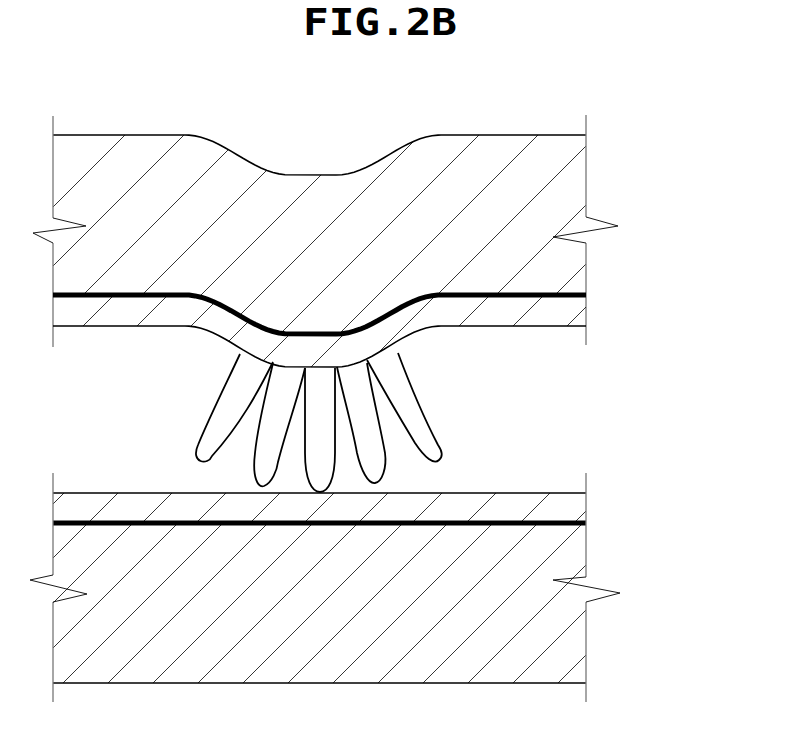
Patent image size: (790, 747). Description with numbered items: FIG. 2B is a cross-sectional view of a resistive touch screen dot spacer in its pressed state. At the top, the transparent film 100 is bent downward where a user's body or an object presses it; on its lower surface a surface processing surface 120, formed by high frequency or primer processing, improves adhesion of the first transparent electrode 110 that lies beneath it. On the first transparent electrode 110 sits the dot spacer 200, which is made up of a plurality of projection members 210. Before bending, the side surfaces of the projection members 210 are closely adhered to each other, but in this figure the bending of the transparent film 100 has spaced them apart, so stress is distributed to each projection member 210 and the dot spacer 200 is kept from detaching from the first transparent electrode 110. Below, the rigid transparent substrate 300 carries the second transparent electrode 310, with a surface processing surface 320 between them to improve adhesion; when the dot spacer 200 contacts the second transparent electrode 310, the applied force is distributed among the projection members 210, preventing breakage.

The transparent film 100 is at (542, 190).
The first transparent electrode 110 is at (563, 317).
The surface processing surface 120 is at (508, 293).
The dot spacer 200 is at (412, 422).
The projection members 210 is at (362, 388).
The transparent substrate 300 is at (547, 645).
The second transparent electrode 310 is at (560, 503).
The surface processing surface 320 is at (533, 528).